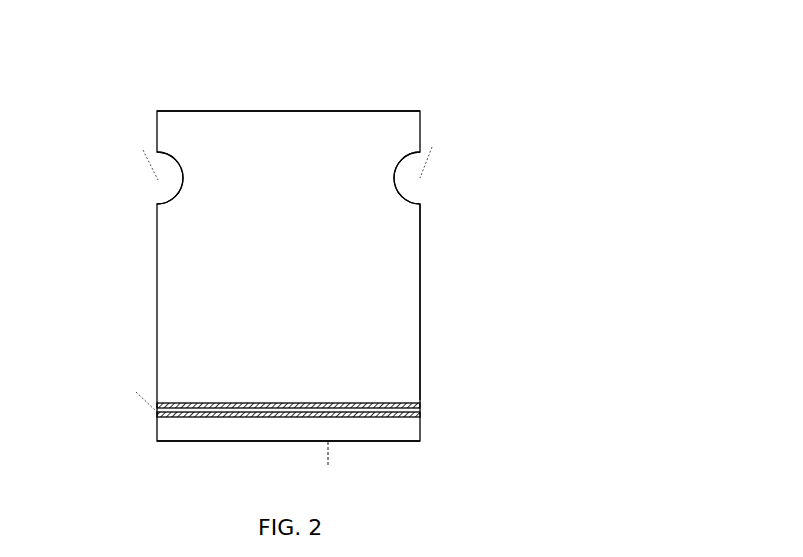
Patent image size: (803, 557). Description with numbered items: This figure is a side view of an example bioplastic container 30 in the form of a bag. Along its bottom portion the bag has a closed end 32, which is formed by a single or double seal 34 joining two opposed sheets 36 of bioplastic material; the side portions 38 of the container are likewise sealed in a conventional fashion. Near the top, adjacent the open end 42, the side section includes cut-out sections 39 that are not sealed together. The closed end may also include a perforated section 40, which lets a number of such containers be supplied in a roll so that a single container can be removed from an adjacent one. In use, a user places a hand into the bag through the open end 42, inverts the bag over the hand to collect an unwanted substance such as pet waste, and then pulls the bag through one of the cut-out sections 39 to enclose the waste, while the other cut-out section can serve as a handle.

The bioplastic container 30 is at (374, 98).
The closed end 32 is at (181, 415).
The single or double seal 34 is at (401, 404).
The opposed sheets 36 is at (401, 284).
The side portions 38 is at (417, 326).
The cut-out sections 39 is at (176, 176).
The perforated section 40 is at (316, 441).
The open end 42 is at (195, 111).